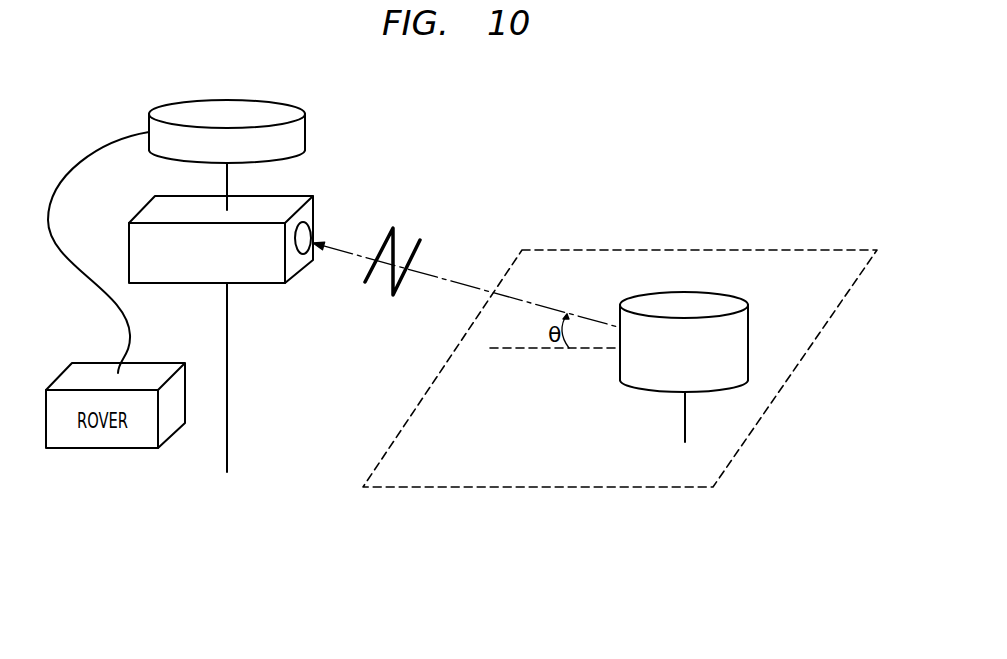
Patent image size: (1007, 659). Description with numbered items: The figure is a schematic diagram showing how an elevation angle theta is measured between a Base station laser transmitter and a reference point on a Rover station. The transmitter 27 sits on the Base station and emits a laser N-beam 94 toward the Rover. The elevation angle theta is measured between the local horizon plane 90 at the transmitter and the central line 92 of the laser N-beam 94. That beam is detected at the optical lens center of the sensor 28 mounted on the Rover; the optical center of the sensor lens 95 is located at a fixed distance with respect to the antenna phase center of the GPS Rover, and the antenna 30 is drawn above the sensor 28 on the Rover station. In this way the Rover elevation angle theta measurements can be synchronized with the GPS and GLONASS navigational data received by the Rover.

The antenna 30 is at (227, 110).
The sensor 28 is at (150, 213).
The sensor lens 95 is at (313, 230).
The central line 92 is at (457, 278).
The laser N-beam 94 is at (405, 282).
The local horizon plane 90 is at (592, 350).
The transmitter 27 is at (738, 333).